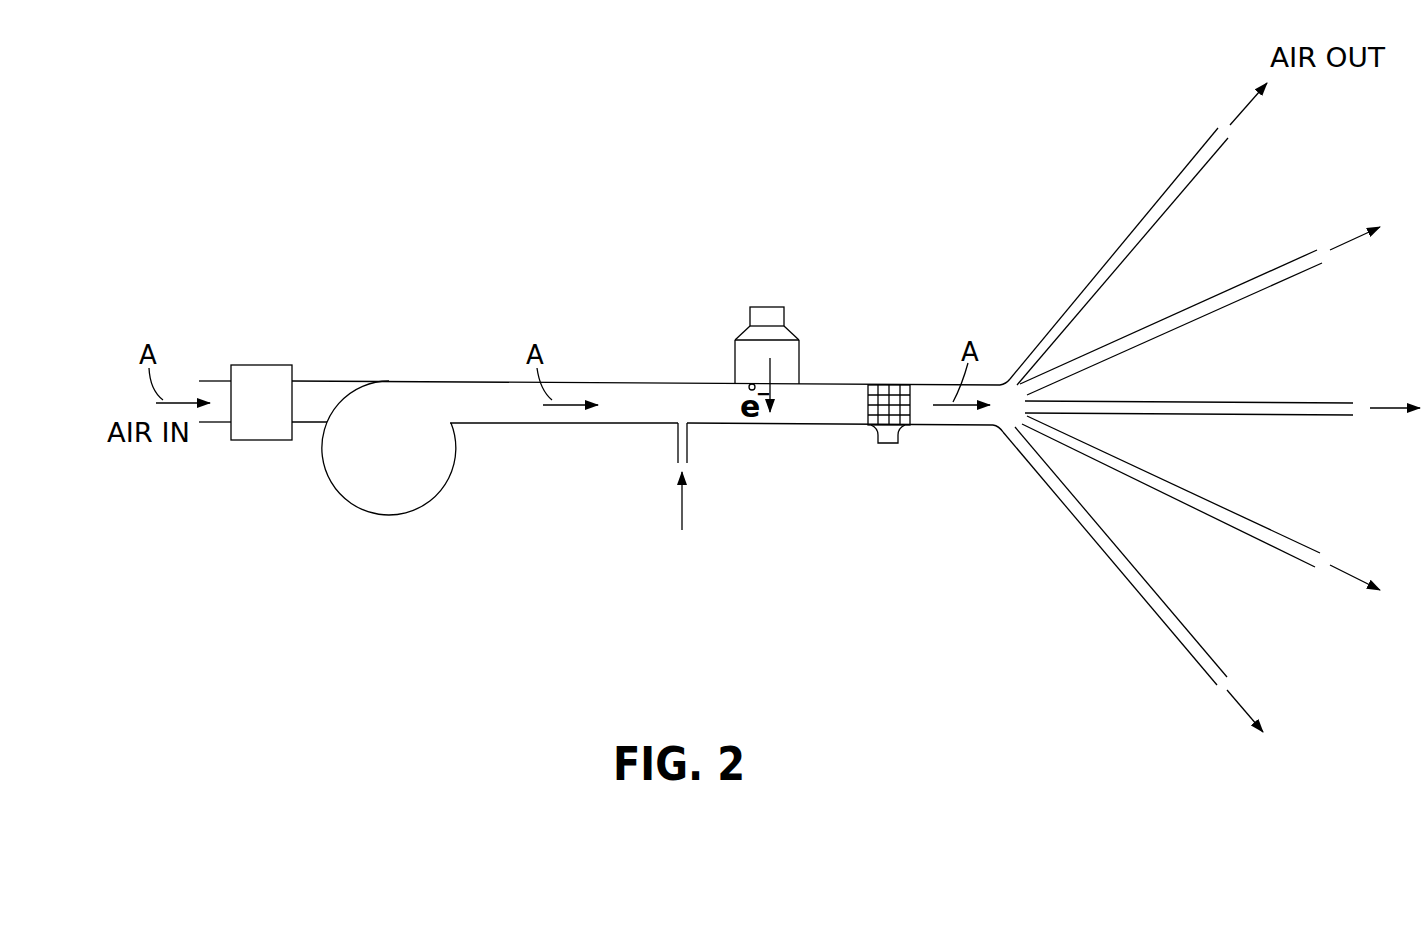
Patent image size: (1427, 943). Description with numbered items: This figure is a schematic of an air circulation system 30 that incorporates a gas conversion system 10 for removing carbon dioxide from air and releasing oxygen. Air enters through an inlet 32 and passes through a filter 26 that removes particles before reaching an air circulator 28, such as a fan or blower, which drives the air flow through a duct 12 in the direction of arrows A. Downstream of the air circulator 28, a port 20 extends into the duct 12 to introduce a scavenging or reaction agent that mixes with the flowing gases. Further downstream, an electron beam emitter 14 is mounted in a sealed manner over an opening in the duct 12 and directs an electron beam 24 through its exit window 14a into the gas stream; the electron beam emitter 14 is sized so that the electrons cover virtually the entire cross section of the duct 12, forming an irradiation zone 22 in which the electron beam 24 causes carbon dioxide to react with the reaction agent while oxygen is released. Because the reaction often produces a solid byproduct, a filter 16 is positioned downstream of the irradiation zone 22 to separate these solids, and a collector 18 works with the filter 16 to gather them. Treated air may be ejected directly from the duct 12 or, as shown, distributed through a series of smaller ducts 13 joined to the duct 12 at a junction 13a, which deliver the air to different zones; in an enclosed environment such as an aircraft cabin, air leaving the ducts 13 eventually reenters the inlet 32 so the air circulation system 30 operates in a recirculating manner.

The gas conversion system 10 is at (860, 332).
The duct 12 is at (672, 382).
The smaller ducts 13 is at (1165, 188).
The junction 13a is at (1010, 407).
The electron beam emitter 14 is at (760, 308).
The exit window 14a is at (749, 386).
The filter 16 is at (890, 387).
The collector 18 is at (890, 447).
The port 20 is at (677, 447).
The irradiation zone 22 is at (762, 417).
The electron beam 24 is at (773, 372).
The filter 26 is at (263, 378).
The air circulator 28 is at (410, 498).
The air circulation system 30 is at (707, 190).
The inlet 32 is at (215, 397).